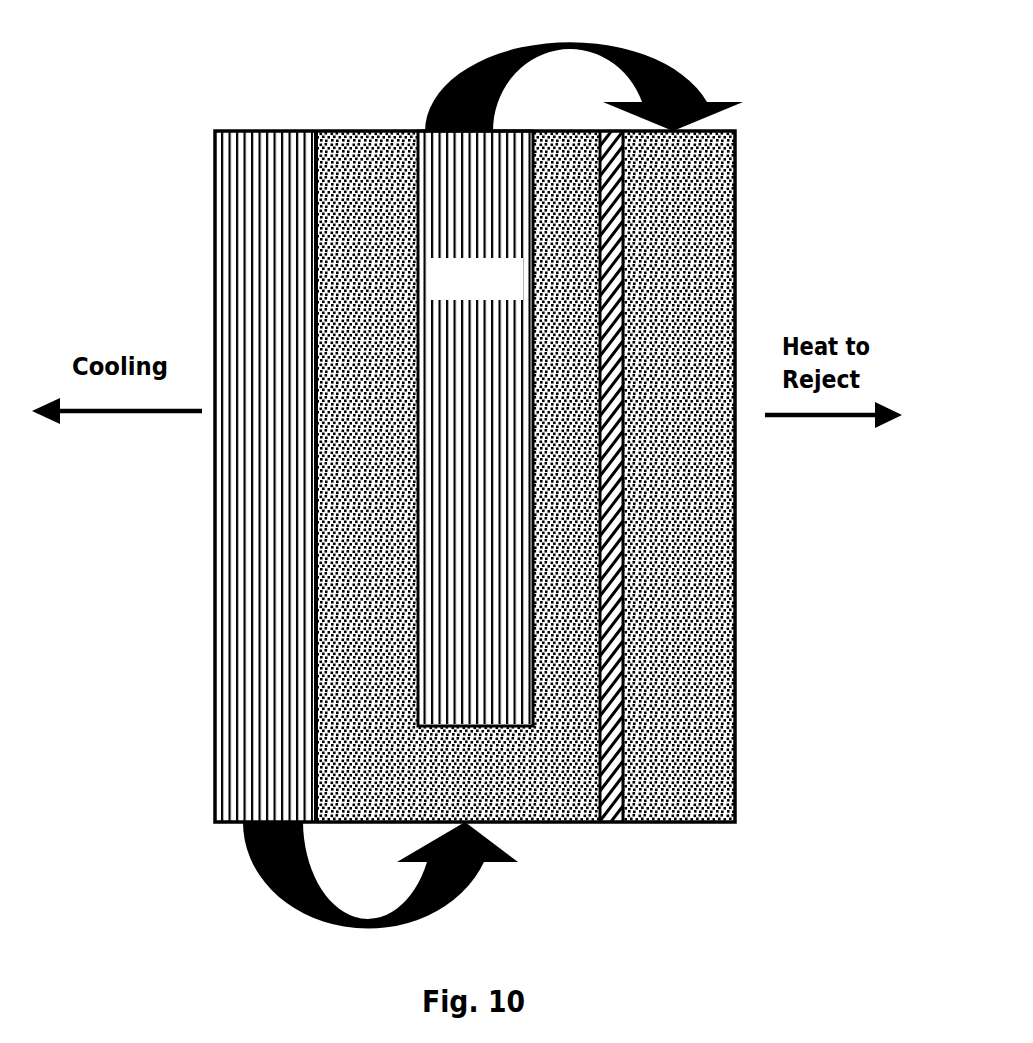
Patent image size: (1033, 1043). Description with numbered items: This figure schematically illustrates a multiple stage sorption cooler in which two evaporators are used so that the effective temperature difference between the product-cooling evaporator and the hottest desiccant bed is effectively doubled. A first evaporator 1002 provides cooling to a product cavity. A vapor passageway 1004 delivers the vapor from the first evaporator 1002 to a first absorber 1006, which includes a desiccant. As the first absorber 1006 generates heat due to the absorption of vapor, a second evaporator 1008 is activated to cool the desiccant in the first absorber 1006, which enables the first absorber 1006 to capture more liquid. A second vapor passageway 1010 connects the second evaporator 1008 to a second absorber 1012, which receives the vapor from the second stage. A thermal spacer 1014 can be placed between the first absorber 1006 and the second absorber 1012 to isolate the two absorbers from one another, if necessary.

The first evaporator 1002 is at (273, 131).
The vapor passageway 1004 is at (292, 915).
The first absorber 1006 is at (380, 131).
The second evaporator 1008 is at (475, 428).
The second vapor passageway 1010 is at (665, 52).
The second absorber 1012 is at (735, 688).
The thermal spacer 1014 is at (602, 822).